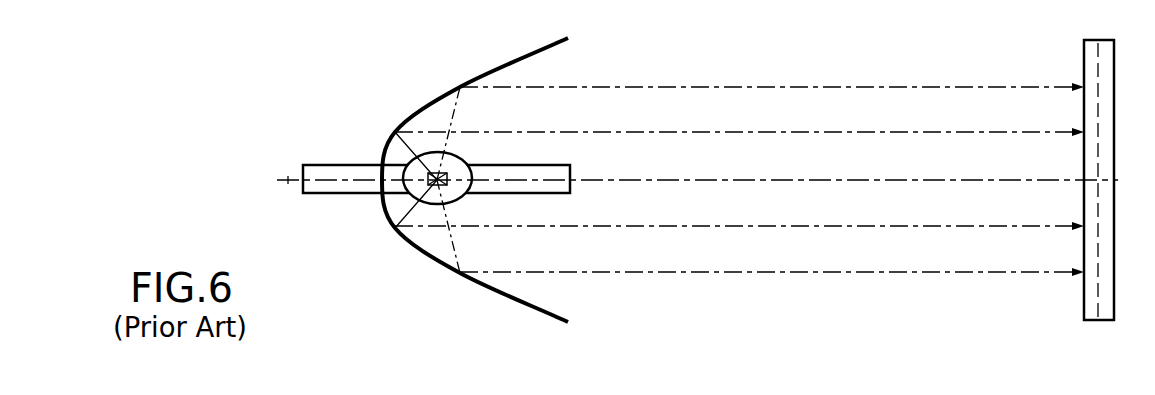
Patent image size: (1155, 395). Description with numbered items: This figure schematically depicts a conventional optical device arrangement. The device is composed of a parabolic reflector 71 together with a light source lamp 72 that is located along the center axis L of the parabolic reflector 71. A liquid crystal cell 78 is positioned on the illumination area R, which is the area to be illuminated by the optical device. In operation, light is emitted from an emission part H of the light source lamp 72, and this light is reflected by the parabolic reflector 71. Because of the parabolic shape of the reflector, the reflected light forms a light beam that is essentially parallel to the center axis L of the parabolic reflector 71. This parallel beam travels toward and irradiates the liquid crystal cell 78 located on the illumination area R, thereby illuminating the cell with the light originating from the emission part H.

The parabolic reflector 71 is at (487, 289).
The light source lamp 72 is at (334, 165).
The liquid crystal cell 78 is at (1084, 60).
The emission part H is at (428, 190).
The center axis L is at (288, 184).
The illumination area R is at (1097, 300).